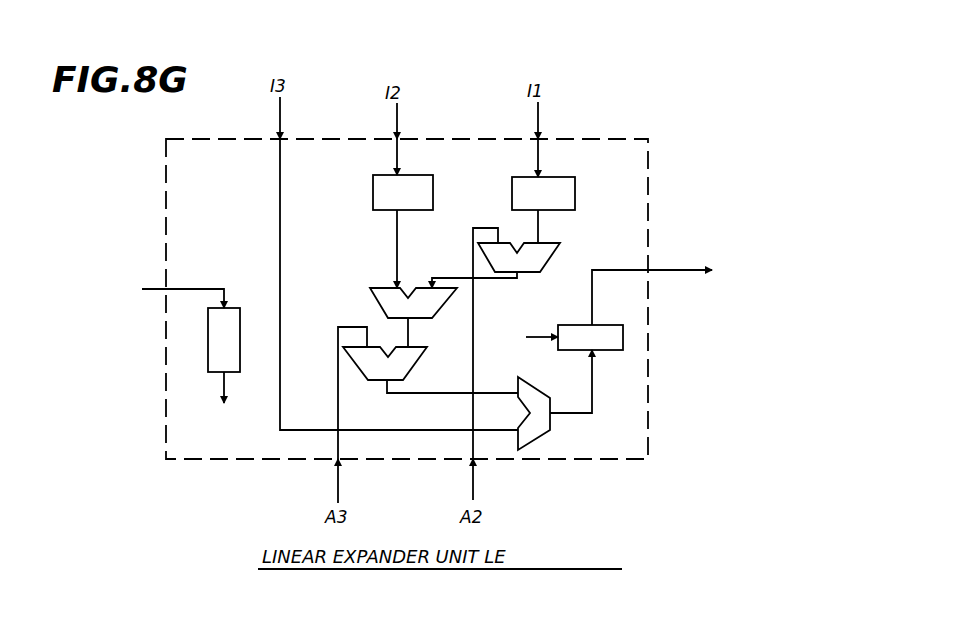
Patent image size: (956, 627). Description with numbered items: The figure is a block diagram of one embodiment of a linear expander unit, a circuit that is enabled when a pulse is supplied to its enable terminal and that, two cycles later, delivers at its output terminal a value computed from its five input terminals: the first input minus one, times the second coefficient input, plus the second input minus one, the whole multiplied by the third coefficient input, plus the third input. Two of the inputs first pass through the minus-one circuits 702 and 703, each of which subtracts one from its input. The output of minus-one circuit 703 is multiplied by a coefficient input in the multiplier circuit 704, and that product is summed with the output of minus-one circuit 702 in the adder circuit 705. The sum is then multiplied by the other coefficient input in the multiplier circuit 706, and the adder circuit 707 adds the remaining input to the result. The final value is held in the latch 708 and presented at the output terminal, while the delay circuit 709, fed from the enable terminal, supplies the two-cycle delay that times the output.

The minus-one circuit 702 is at (388, 175).
The minus-one circuit 703 is at (527, 177).
The multiplier circuit 704 is at (560, 243).
The adder circuit 705 is at (367, 300).
The multiplier circuit 706 is at (366, 372).
The adder circuit 707 is at (562, 371).
The latch 708 is at (581, 310).
The delay circuit 709 is at (232, 312).